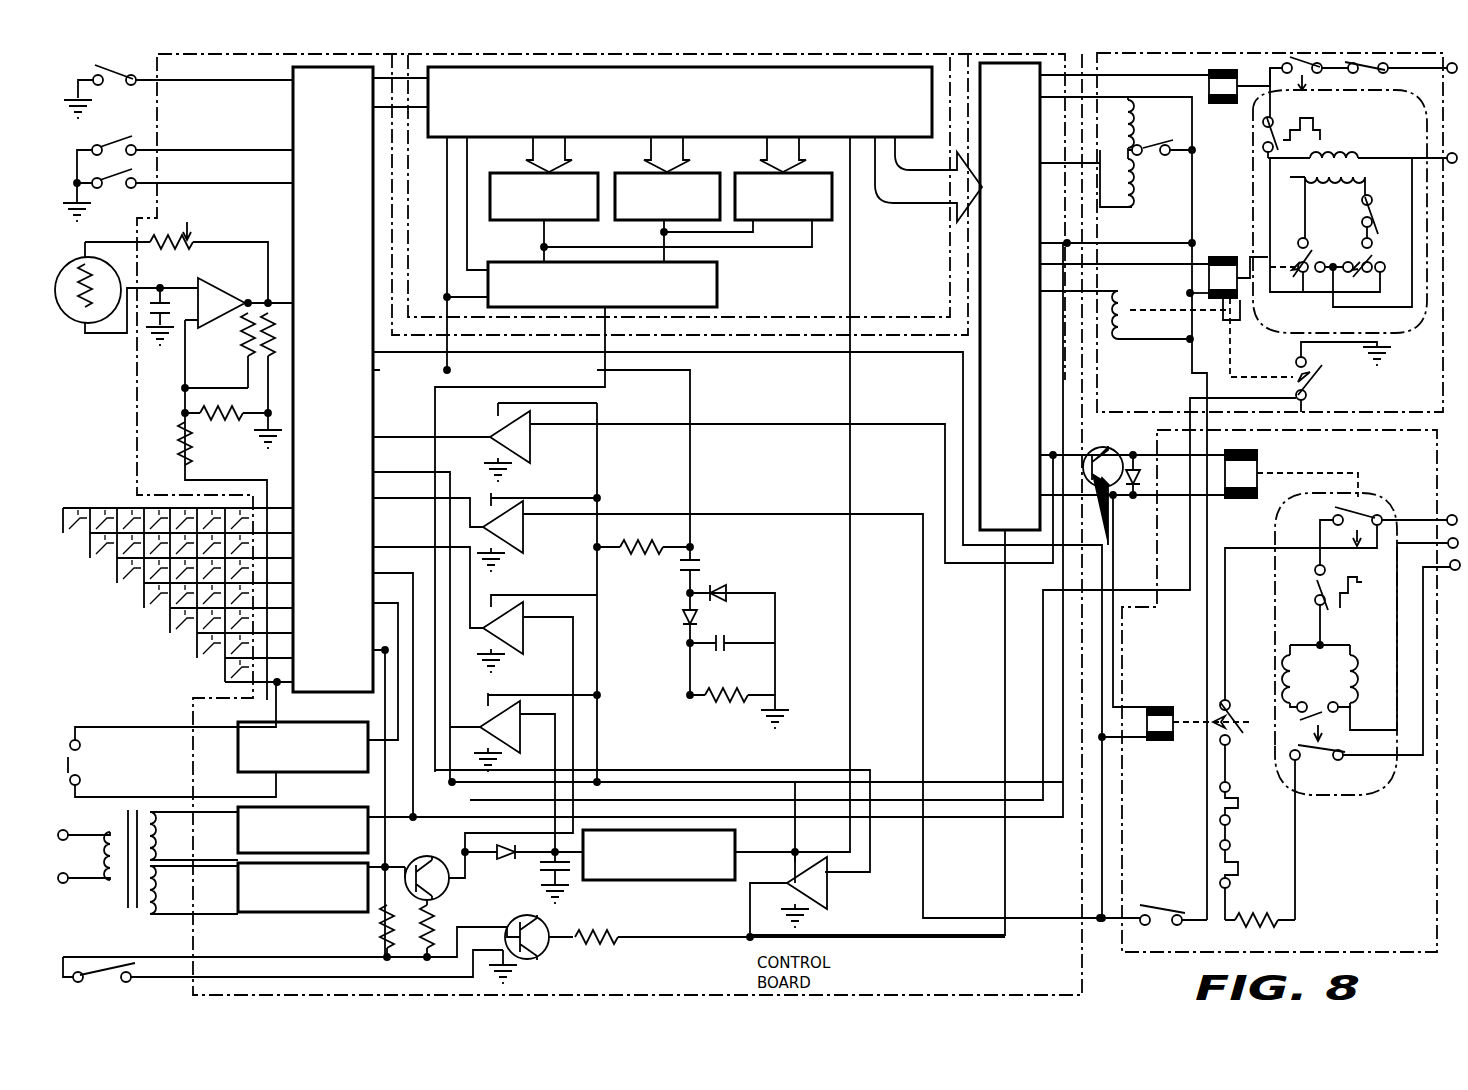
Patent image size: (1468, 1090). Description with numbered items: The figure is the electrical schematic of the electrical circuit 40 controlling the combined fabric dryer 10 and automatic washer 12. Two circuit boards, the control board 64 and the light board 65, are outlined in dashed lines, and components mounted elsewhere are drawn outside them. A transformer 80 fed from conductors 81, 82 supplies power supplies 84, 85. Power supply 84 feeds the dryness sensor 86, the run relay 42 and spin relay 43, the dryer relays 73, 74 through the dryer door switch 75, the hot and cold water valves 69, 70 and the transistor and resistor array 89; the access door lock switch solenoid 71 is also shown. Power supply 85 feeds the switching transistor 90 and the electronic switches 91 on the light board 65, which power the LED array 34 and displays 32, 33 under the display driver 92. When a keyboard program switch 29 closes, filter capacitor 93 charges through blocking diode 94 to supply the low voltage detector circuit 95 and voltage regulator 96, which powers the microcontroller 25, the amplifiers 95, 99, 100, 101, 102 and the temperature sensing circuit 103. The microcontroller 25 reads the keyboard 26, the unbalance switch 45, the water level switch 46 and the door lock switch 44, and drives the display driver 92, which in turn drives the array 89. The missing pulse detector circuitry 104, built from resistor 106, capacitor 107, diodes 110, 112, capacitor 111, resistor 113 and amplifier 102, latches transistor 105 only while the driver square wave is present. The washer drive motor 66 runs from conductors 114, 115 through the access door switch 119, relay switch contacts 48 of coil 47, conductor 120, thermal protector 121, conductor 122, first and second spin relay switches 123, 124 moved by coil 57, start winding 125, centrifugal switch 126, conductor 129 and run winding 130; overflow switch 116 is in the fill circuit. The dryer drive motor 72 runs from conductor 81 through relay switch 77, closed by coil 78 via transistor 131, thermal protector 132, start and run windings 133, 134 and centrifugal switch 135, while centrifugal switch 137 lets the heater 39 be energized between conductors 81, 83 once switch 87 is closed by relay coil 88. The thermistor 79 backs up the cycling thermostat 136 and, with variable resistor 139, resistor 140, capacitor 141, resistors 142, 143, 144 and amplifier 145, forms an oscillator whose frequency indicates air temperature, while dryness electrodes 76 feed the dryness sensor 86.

The fabric dryer 10 is at (1420, 992).
The automatic washer 12 is at (1440, 395).
The microcontroller 25 is at (373, 416).
The keyboard 26 is at (108, 648).
The keyboard program switch 29 is at (184, 655).
The display 32 is at (703, 172).
The display 33 is at (606, 158).
The LED array 34 is at (813, 172).
The fabric dryer heater 39 is at (1242, 917).
The electrical circuit 40 is at (1143, 978).
The run relay 42 is at (1165, 68).
The spin relay 43 is at (1220, 216).
The access door lock switch 44 is at (1310, 378).
The unbalance switch 45 is at (114, 82).
The water level switch 46 is at (106, 146).
The coil 47 is at (1222, 116).
The relay switch contacts 48 is at (1308, 78).
The coil 57 is at (1232, 320).
The control board 64 is at (1081, 990).
The light board 65 is at (925, 226).
The automatic washer drive motor 66 is at (1286, 342).
The hot water valve 69 is at (1138, 112).
The cold water valve 70 is at (1150, 216).
The access door lock switch solenoid 71 is at (1124, 298).
The fabric dryer drive motor 72 is at (1376, 800).
The motor relay 73 is at (1318, 450).
The heater relay 74 is at (1145, 780).
The fabric dryer door switch 75 is at (1181, 907).
The fabric dryness sensors 76 is at (82, 764).
The relay switch 77 is at (1360, 508).
The coil 78 is at (1245, 505).
The thermistor 79 is at (82, 322).
The transformer 80 is at (168, 945).
The conductor 81 is at (104, 830).
The conductor 82 is at (86, 896).
The power conductor 83 is at (1450, 574).
The power supply 84 is at (330, 806).
The power supply 85 is at (290, 912).
The dryness sensor 86 is at (238, 745).
The switch 87 is at (1255, 695).
The relay coil 88 is at (1142, 703).
The transistor and resistor array 89 is at (980, 388).
The switching transistor 90 is at (443, 900).
The electronic switches 91 is at (724, 285).
The display driver 92 is at (680, 102).
The filter capacitor 93 is at (569, 882).
The blocking diode 94 is at (501, 865).
The low voltage detector circuit 95 is at (506, 756).
The voltage regulator 96 is at (682, 884).
The pulse generator circuit 99 is at (518, 632).
The amplifier 100 is at (520, 532).
The amplifier 101 is at (526, 442).
The amplifier 102 is at (832, 902).
The temperature sensing circuit 103 is at (174, 456).
The missing pulse detector circuitry 104 is at (717, 636).
The latching transistor 105 is at (543, 957).
The resistor 106 is at (623, 556).
The capacitor 107 is at (700, 560).
The diode 110 is at (674, 626).
The capacitor 111 is at (730, 660).
The diode 112 is at (746, 588).
The resistor 113 is at (724, 710).
The conductor 114 is at (1445, 76).
The conductor 115 is at (1434, 164).
The overflow switch 116 is at (1144, 158).
The access door switch 119 is at (1360, 76).
The conductor 120 is at (1266, 78).
The thermal protector 121 is at (1309, 120).
The conductor 122 is at (1282, 212).
The first spin relay switch 123 is at (1298, 291).
The second spin relay switch 124 is at (1372, 322).
The start winding 125 is at (1356, 184).
The centrifugal switch 126 is at (1368, 228).
The conductor 129 is at (1341, 205).
The run winding 130 is at (1354, 152).
The transistor 131 is at (1107, 444).
The thermal protector 132 is at (1340, 608).
The start winding 133 is at (1280, 650).
The run winding 134 is at (1370, 658).
The centrifugal switch 135 is at (1302, 728).
The cycling thermostat 136 is at (1260, 812).
The centrifugal switch 137 is at (1322, 764).
The variable resistor 139 is at (194, 239).
The resistor 140 is at (244, 355).
The capacitor 141 is at (165, 298).
The resistor 142 is at (244, 424).
The resistor 143 is at (191, 462).
The resistor 144 is at (244, 382).
The amplifier 145 is at (242, 299).